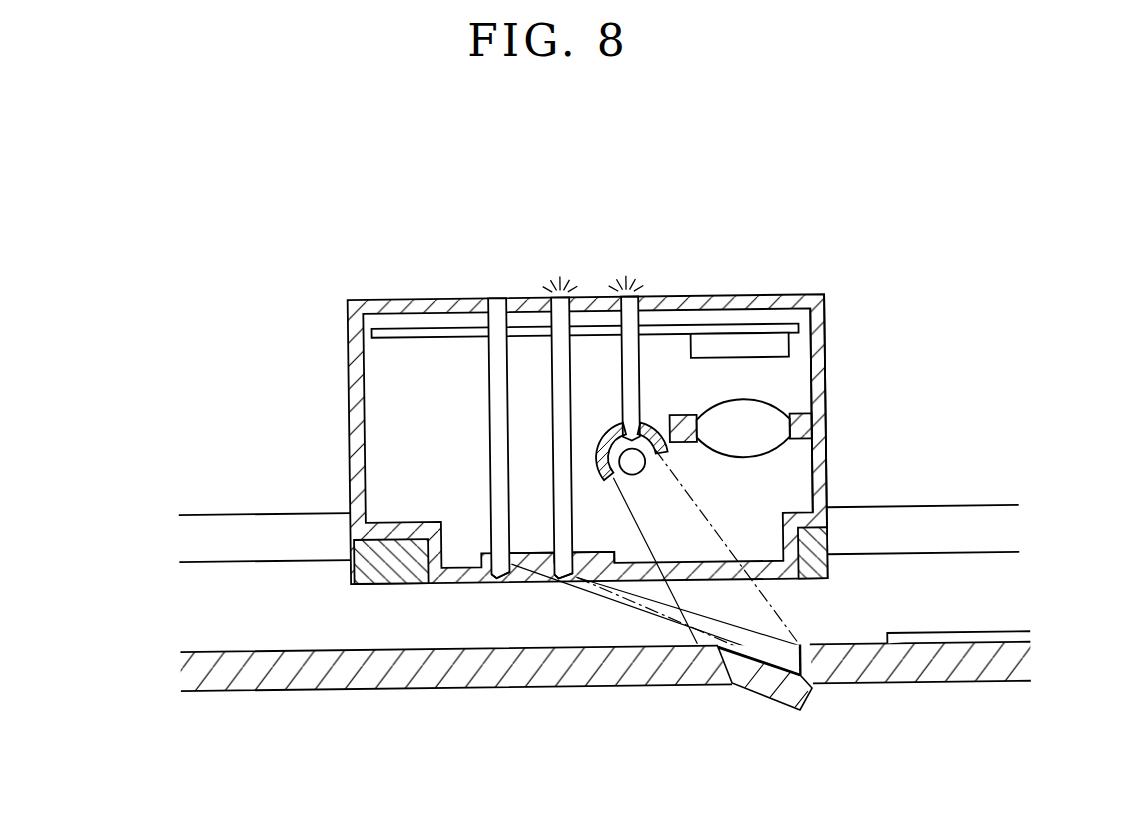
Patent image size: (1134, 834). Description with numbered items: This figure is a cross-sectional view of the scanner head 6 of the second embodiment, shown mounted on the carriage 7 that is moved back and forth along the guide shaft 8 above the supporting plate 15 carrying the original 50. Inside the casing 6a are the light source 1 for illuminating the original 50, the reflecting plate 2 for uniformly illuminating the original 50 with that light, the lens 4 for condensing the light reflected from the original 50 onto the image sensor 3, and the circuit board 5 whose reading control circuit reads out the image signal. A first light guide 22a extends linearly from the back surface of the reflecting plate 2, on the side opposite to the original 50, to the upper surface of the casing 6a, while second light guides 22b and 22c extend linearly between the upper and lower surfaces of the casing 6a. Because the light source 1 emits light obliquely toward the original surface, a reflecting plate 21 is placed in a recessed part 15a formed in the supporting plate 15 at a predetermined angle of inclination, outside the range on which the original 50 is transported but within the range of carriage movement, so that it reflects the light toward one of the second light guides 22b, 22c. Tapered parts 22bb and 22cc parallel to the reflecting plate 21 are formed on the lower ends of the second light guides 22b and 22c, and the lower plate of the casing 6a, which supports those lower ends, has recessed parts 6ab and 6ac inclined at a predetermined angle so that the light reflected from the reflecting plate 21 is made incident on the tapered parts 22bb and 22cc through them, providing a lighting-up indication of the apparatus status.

The light source 1 is at (640, 476).
The reflecting plate 2 is at (610, 438).
The image sensor 3 is at (746, 350).
The lens 4 is at (773, 417).
The circuit board 5 is at (406, 328).
The scanner head 6 is at (342, 322).
The casing 6a is at (814, 303).
The recessed part 6ab is at (594, 555).
The recessed part 6ac is at (531, 552).
The carriage 7 is at (350, 577).
The guide shaft 8 is at (257, 510).
The supporting plate 15 is at (942, 686).
The recessed part 15a is at (779, 662).
The reflecting plate 21 is at (797, 664).
The first light guide 22a is at (634, 297).
The second light guide 22b is at (566, 297).
The tapered part 22bb is at (578, 580).
The second light guide 22c is at (502, 296).
The tapered part 22cc is at (511, 577).
The original 50 is at (928, 638).